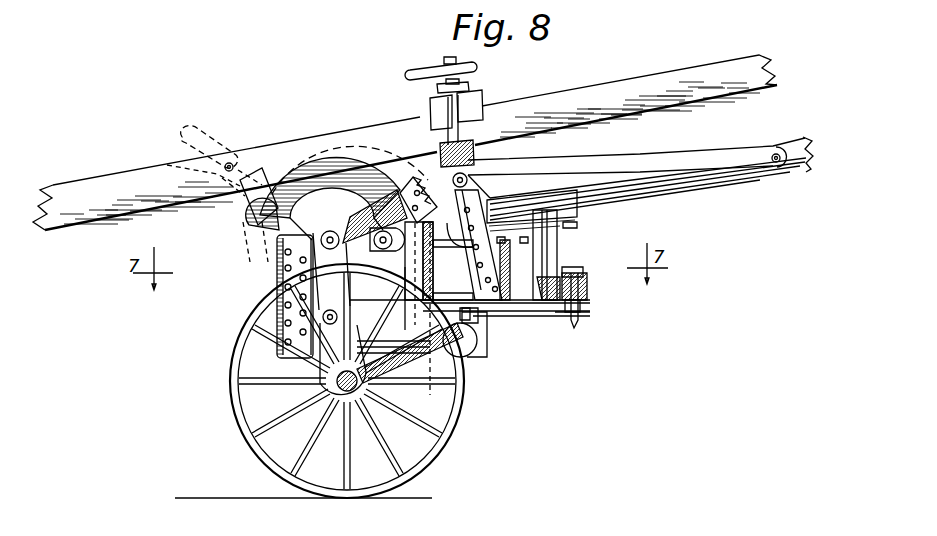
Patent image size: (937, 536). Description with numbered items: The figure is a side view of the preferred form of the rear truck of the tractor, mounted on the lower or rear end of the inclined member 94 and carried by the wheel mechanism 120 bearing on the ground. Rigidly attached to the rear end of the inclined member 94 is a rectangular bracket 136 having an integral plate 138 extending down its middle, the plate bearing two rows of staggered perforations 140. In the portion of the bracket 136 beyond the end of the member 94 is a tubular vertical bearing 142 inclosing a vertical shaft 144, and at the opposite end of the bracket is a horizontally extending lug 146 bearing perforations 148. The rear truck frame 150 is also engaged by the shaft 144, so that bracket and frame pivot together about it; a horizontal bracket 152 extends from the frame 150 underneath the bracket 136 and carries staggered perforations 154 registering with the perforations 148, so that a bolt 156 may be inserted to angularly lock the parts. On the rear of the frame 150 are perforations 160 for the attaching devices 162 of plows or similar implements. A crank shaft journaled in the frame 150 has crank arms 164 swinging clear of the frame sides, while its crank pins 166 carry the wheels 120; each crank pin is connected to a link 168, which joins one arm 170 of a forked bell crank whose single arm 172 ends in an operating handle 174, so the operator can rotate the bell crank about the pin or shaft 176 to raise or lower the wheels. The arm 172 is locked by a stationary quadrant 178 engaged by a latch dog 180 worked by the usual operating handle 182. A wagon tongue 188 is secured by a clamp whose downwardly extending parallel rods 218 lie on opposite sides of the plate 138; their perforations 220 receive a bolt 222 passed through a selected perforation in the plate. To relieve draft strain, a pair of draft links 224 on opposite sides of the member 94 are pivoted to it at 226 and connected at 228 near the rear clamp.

The tongue 188 is at (72, 190).
The operating handle 182 is at (162, 166).
The operating handle 174 is at (191, 128).
The stationary quadrant 178 is at (303, 180).
The single arm 172 is at (350, 180).
The latch dog 180 is at (387, 187).
The pivot 228 is at (480, 166).
The parallel rods 218 is at (505, 192).
The pivot 226 is at (776, 153).
The inclined member 94 is at (657, 195).
The draft links 224 is at (703, 168).
The perforations 220 is at (556, 230).
The rectangular bracket 136 is at (557, 255).
The plate 138 is at (497, 258).
The perforations 148 is at (572, 268).
The horizontally extending lug 146 is at (586, 289).
The bolt 156 is at (582, 302).
The perforations 154 is at (580, 320).
The horizontal bracket 152 is at (547, 313).
The perforations 140 is at (500, 302).
The attaching devices 162 is at (468, 360).
The bolt 222 is at (469, 245).
The tubular vertical bearing 142 is at (407, 257).
The pin or shaft 176 is at (254, 241).
The perforations 160 is at (287, 268).
The arm 170 is at (325, 287).
The wheel mechanism 120 is at (250, 305).
The rear truck frame 150 is at (318, 367).
The link 168 is at (302, 384).
The crank pins 166 is at (314, 419).
The crank arms 164 is at (392, 388).
The vertical shaft 144 is at (433, 363).